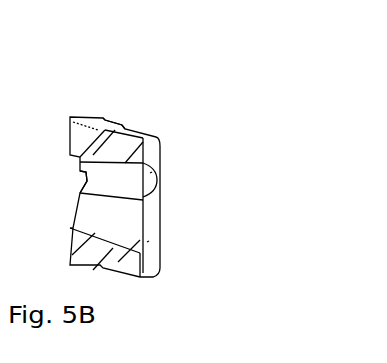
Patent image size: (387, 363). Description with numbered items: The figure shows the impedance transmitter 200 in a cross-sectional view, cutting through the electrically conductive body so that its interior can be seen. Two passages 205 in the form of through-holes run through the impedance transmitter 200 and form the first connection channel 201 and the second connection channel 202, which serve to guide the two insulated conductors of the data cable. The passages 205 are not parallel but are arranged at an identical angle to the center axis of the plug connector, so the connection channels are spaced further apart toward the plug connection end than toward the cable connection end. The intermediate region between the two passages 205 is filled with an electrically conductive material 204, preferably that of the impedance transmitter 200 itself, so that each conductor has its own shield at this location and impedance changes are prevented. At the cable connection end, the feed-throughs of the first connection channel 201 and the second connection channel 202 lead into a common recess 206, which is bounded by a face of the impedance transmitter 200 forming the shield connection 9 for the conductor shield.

The impedance transmitter 200 is at (165, 123).
The first connection channel 201 is at (107, 177).
The second connection channel 202 is at (107, 228).
The electrically conductive material 204 is at (117, 199).
The passages 205 is at (148, 173).
The common recess 206 is at (80, 175).
The shield connection 9 is at (64, 240).